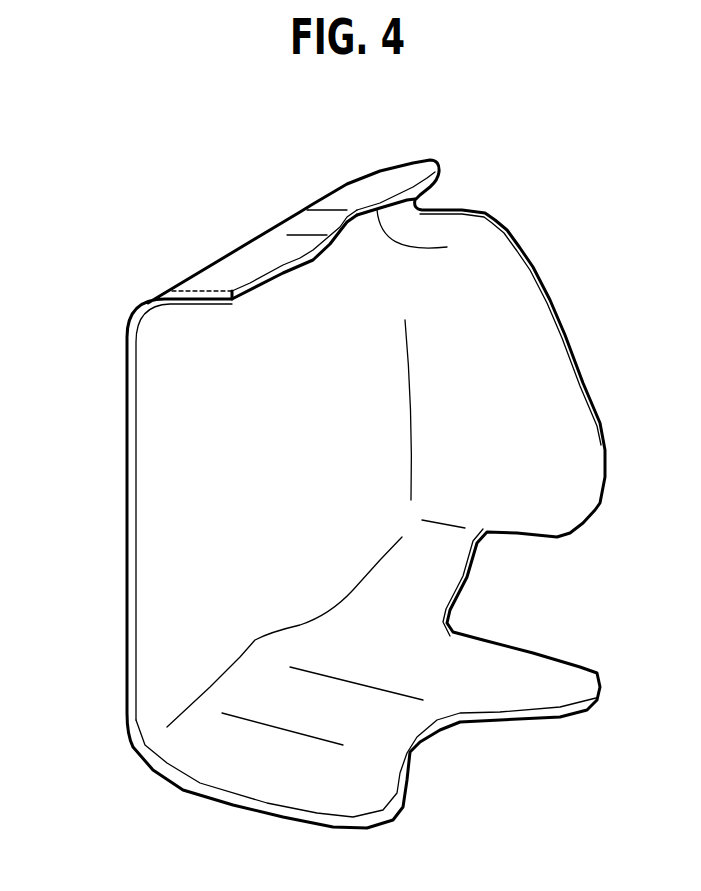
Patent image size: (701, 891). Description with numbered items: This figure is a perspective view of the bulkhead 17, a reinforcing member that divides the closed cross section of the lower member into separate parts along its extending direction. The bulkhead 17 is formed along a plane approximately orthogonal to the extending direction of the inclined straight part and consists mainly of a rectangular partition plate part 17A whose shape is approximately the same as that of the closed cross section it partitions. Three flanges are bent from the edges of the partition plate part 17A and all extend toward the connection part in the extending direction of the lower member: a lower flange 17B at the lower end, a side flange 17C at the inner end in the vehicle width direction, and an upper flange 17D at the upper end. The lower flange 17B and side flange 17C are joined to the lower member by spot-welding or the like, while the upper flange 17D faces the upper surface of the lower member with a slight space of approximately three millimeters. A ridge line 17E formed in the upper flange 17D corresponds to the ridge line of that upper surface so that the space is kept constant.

The bulkhead 17 is at (93, 424).
The partition plate part 17A is at (190, 542).
The lower flange 17B is at (267, 773).
The side flange 17C is at (523, 363).
The upper flange 17D is at (377, 192).
The ridge line 17E is at (307, 227).